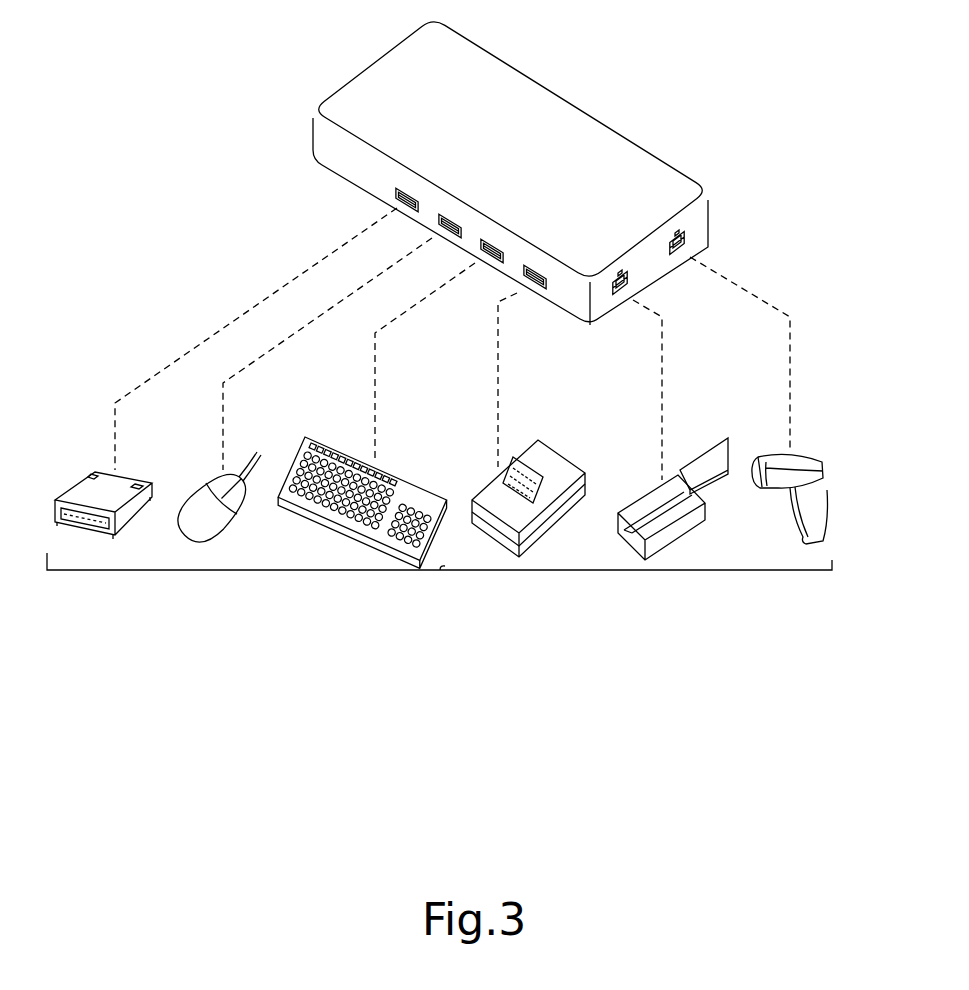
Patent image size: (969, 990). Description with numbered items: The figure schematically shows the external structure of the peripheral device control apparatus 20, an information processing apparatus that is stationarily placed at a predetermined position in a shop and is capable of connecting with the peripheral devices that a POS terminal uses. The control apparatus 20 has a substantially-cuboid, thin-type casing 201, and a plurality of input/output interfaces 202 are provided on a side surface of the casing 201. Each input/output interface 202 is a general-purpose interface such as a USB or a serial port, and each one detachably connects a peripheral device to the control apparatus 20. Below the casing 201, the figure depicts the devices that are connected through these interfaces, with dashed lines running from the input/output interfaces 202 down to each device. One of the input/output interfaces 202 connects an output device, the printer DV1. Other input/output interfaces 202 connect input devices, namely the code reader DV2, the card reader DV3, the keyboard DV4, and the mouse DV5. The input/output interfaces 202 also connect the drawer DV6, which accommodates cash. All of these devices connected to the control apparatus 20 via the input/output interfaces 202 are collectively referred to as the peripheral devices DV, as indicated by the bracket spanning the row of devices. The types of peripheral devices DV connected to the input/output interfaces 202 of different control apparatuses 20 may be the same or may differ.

The peripheral device control apparatus 20 is at (510, 169).
The casing 201 is at (497, 60).
The input/output interfaces 202 is at (447, 218).
The peripheral devices DV is at (439, 578).
The printer DV1 is at (552, 445).
The code reader DV2 is at (808, 457).
The card reader DV3 is at (645, 497).
The keyboard DV4 is at (327, 443).
The mouse DV5 is at (203, 487).
The drawer DV6 is at (93, 468).